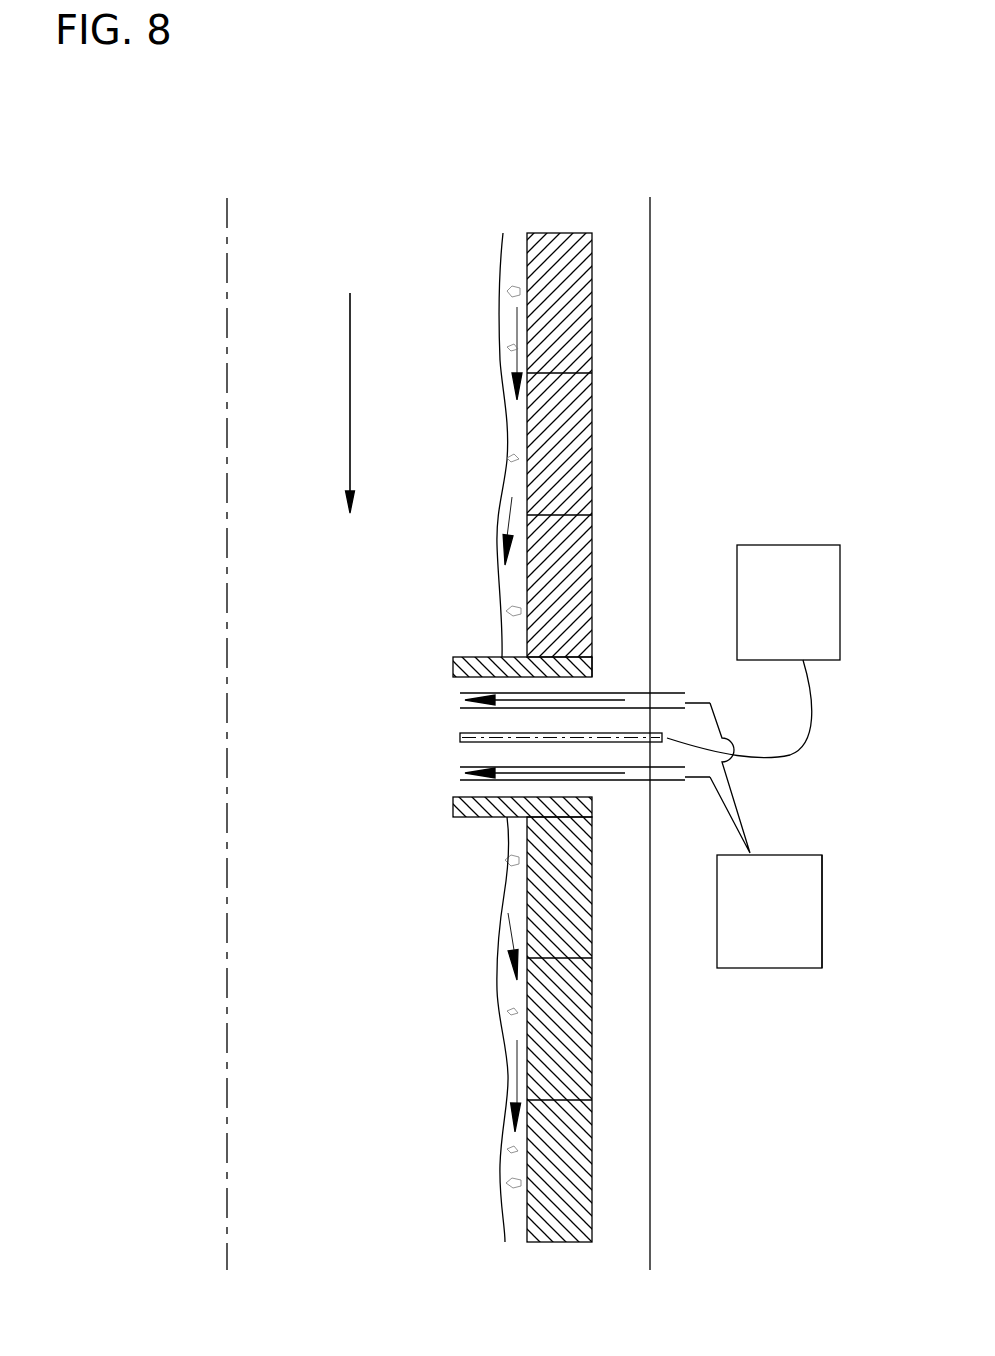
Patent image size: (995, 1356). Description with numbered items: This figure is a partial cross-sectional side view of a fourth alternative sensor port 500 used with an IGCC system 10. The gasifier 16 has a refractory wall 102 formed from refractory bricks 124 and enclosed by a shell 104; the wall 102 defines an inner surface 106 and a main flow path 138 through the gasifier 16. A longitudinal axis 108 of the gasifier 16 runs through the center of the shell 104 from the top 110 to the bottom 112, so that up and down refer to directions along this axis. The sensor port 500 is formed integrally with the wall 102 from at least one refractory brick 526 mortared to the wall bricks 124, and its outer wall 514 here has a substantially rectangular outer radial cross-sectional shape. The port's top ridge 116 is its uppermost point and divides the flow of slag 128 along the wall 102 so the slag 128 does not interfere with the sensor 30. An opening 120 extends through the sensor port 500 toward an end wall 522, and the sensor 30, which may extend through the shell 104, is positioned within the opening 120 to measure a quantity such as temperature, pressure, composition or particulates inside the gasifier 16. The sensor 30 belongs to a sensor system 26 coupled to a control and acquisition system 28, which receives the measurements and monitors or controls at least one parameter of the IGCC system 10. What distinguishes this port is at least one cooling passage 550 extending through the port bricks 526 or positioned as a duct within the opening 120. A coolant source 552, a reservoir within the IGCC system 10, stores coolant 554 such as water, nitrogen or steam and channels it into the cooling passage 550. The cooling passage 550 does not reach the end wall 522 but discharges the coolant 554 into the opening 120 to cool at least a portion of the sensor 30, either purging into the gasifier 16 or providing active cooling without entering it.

The IGCC system 10 is at (284, 160).
The gasifier 16 is at (322, 443).
The sensor system 26 is at (780, 792).
The control and acquisition system 28 is at (805, 618).
The sensor 30 is at (663, 732).
The wall 102 is at (500, 312).
The shell 104 is at (617, 307).
The inner surface 106 is at (527, 418).
The longitudinal axis 108 is at (227, 973).
The top 110 is at (405, 229).
The bottom 112 is at (393, 1190).
The top ridge 116 is at (455, 658).
The opening 120 is at (435, 687).
The refractory bricks 124 is at (577, 428).
The slag 128 is at (492, 575).
The main flow path 138 is at (350, 370).
The sensor port 500 is at (408, 790).
The port outer wall 514 is at (513, 818).
The end wall 522 is at (455, 806).
The refractory brick 526 is at (585, 663).
The cooling passage 550 is at (482, 763).
The coolant source 552 is at (792, 927).
The coolant 554 is at (808, 882).